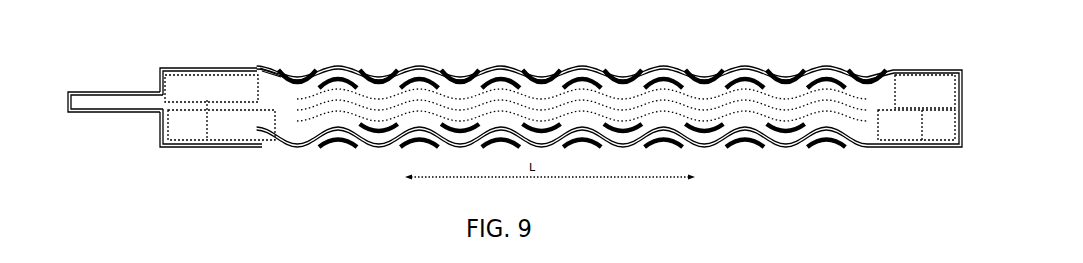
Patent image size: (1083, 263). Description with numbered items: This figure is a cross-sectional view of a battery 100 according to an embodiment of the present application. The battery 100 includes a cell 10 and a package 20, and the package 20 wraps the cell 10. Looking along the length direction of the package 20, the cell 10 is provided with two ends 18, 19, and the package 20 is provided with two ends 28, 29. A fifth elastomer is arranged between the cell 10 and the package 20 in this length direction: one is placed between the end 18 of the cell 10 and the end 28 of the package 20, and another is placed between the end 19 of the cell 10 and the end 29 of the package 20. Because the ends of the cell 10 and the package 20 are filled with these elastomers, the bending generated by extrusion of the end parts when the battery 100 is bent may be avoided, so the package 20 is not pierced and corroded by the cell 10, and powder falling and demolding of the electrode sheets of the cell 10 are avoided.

The battery 100 is at (527, 109).
The cell 10 is at (771, 146).
The end of the cell 18 is at (287, 117).
The end of the cell 19 is at (868, 109).
The package 20 is at (210, 67).
The end of the package 28 is at (158, 127).
The end of the package 29 is at (962, 124).